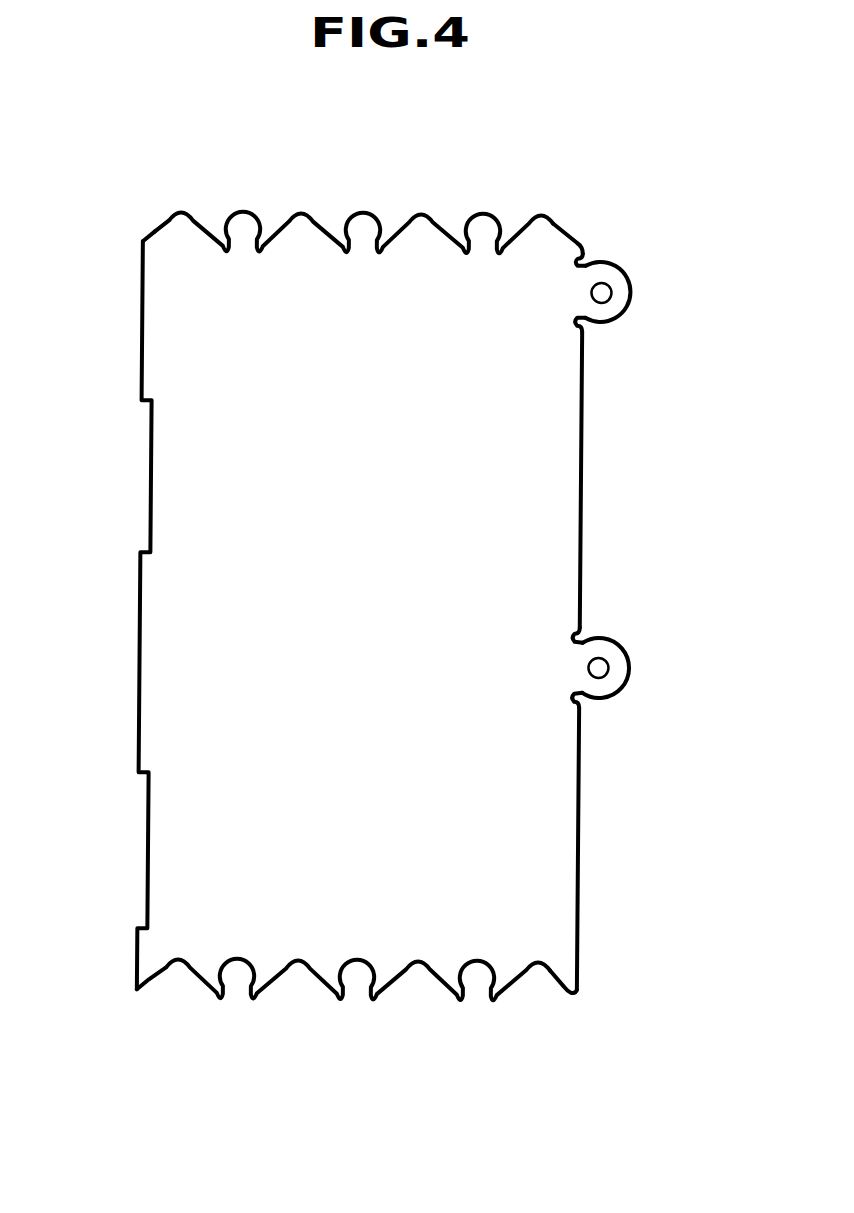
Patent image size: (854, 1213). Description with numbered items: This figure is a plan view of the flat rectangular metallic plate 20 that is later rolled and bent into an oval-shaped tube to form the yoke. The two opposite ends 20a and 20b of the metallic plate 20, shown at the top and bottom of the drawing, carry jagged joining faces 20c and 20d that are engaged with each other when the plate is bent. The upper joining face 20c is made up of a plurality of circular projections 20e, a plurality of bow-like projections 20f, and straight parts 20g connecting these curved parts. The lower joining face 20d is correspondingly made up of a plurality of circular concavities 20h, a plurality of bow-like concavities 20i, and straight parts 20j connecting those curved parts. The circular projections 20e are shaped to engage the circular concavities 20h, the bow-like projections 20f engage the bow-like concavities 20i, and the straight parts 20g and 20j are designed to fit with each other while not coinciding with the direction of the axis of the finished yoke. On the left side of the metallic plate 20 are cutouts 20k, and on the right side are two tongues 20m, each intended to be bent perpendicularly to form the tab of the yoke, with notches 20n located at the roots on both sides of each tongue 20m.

The metallic plate 20 is at (556, 428).
The opposite end 20a is at (372, 262).
The opposite end 20b is at (353, 915).
The joining face 20c is at (560, 215).
The joining face 20d is at (577, 997).
The circular projections 20e is at (367, 225).
The bow-like projections 20f is at (303, 226).
The straight parts 20g is at (283, 233).
The circular concavities 20h is at (507, 975).
The bow-like concavities 20i is at (301, 957).
The straight parts 20j is at (388, 982).
The cutouts 20k is at (150, 473).
The tongues 20m is at (615, 272).
The notches 20n is at (585, 258).